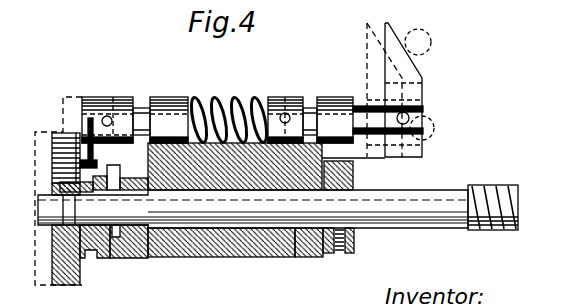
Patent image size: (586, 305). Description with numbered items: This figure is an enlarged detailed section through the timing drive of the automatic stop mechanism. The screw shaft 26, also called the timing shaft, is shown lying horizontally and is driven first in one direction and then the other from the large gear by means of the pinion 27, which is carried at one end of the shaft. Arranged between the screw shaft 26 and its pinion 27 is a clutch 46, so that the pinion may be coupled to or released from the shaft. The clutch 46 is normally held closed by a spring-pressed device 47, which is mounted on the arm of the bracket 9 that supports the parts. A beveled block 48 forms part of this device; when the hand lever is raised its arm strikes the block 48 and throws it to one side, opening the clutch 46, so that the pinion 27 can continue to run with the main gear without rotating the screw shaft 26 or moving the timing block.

The bracket 9 is at (228, 250).
The screw shaft 26 is at (292, 255).
The pinion 27 is at (72, 276).
The clutch 46 is at (97, 256).
The spring-pressed device 47 is at (214, 102).
The beveled block 48 is at (392, 72).